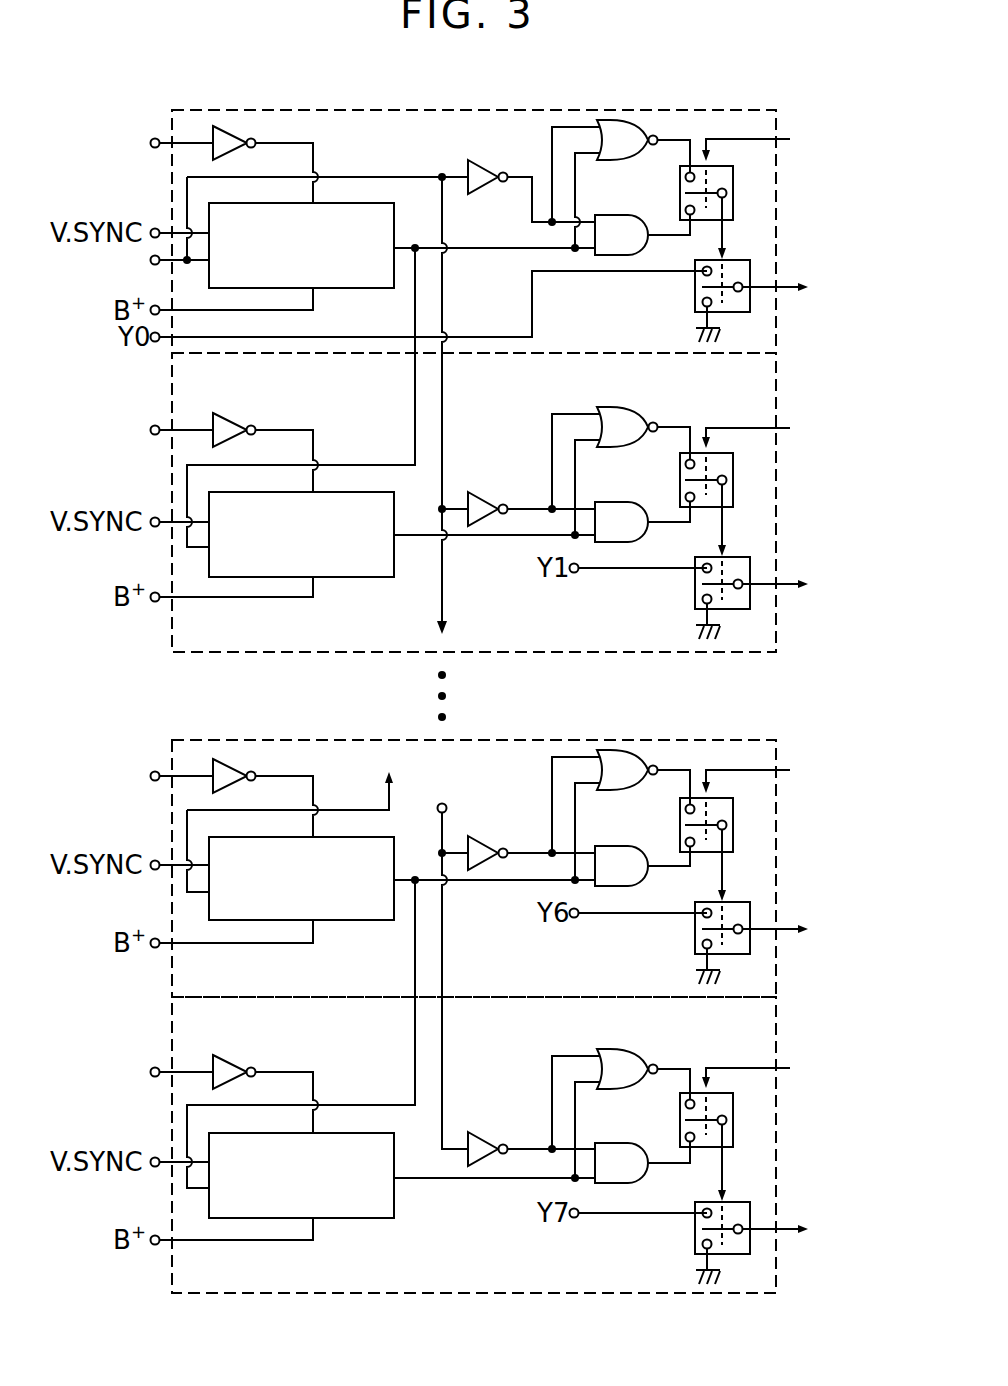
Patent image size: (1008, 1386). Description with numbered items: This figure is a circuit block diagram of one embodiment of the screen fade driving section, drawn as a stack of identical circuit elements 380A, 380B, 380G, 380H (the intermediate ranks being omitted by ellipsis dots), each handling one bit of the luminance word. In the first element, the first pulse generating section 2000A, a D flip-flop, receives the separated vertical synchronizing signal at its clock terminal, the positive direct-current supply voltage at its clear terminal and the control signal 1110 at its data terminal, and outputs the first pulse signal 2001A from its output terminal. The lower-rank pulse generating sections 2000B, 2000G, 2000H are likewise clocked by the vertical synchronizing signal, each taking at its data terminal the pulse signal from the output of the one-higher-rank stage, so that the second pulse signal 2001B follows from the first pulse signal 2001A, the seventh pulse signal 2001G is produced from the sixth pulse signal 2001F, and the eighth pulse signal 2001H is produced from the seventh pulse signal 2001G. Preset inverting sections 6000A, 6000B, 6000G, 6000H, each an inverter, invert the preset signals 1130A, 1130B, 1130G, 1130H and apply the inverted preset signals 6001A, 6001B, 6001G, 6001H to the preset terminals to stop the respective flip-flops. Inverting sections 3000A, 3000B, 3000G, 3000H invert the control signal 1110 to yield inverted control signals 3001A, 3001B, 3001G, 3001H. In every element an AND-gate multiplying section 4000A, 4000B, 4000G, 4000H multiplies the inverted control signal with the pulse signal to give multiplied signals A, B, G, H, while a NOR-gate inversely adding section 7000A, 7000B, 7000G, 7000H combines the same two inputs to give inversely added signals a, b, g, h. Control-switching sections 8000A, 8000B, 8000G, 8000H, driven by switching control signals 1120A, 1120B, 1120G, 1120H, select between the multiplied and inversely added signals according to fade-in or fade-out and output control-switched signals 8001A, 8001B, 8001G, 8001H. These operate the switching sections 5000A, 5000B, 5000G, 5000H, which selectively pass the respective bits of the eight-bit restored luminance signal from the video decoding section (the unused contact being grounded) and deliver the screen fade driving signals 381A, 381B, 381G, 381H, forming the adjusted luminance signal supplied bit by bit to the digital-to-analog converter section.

The circuit element of screen fade driving section 380A is at (172, 123).
The circuit element of screen fade driving section 380B is at (172, 381).
The circuit element of screen fade driving section 380G is at (172, 757).
The circuit element of screen fade driving section 380H is at (172, 1020).
The first preset signal 1130A is at (138, 143).
The second preset signal 1130B is at (138, 430).
The seventh preset signal 1130G is at (138, 776).
The eighth preset signal 1130H is at (138, 1072).
The first preset inverting section 6000A is at (202, 157).
The second preset inverting section 6000B is at (202, 445).
The seventh preset inverting section 6000G is at (202, 790).
The eighth preset inverting section 6000H is at (202, 1086).
The first inverted preset signal 6001A is at (287, 141).
The second inverted preset signal 6001B is at (287, 428).
The seventh inverted preset signal 6001G is at (287, 774).
The eighth inverted preset signal 6001H is at (287, 1070).
The first pulse generating section 2000A is at (341, 203).
The second pulse generating section 2000B is at (341, 492).
The seventh pulse generating section 2000G is at (341, 837).
The eighth pulse generating section 2000H is at (341, 1133).
The first pulse signal 2001A is at (405, 245).
The second pulse signal 2001B is at (415, 540).
The sixth pulse signal 2001F is at (310, 777).
The seventh pulse signal 2001G is at (403, 883).
The eighth pulse signal 2001H is at (415, 1182).
The control signal 1110 is at (279, 661).
The first inverting section 3000A is at (478, 160).
The second inverting section 3000B is at (485, 526).
The seventh inverting section 3000G is at (485, 871).
The eighth inverting section 3000H is at (485, 1168).
The first inverted control signal 3001A is at (522, 172).
The second inverted control signal 3001B is at (522, 500).
The seventh inverted control signal 3001G is at (527, 845).
The eighth inverted control signal 3001H is at (527, 1140).
The first inversely adding section 7000A is at (617, 120).
The second inversely adding section 7000B is at (617, 407).
The seventh inversely adding section 7000G is at (617, 750).
The eighth inversely adding section 7000H is at (617, 1049).
The first multiplying section 4000A is at (600, 256).
The second multiplying section 4000B is at (600, 543).
The seventh multiplying section 4000G is at (600, 887).
The eighth multiplying section 4000H is at (600, 1184).
The first inversely added signal a is at (668, 139).
The second inversely added signal b is at (668, 427).
The seventh inversely added signal g is at (668, 769).
The eighth inversely added signal h is at (668, 1068).
The first multiplied signal A is at (663, 236).
The second multiplied signal B is at (663, 523).
The seventh multiplied signal G is at (663, 867).
The eighth multiplied signal H is at (663, 1164).
The first switching control signal 1120A is at (791, 142).
The second switching control signal 1120B is at (791, 430).
The seventh switching control signal 1120G is at (792, 774).
The eighth switching control signal 1120H is at (792, 1070).
The first control-switching section 8000A is at (735, 193).
The second control-switching section 8000B is at (735, 480).
The seventh control-switching section 8000G is at (735, 825).
The eighth control-switching section 8000H is at (735, 1120).
The first control-switched signal 8001A is at (728, 235).
The second control-switched signal 8001B is at (728, 528).
The seventh control-switched signal 8001G is at (728, 873).
The eighth control-switched signal 8001H is at (728, 1175).
The first screen fade driving signal 381A is at (812, 287).
The second screen fade driving signal 381B is at (812, 584).
The seventh screen fade driving signal 381G is at (813, 929).
The eighth screen fade driving signal 381H is at (813, 1229).
The first switching section 5000A is at (733, 315).
The second switching section 5000B is at (733, 612).
The seventh switching section 5000G is at (733, 957).
The eighth switching section 5000H is at (733, 1257).